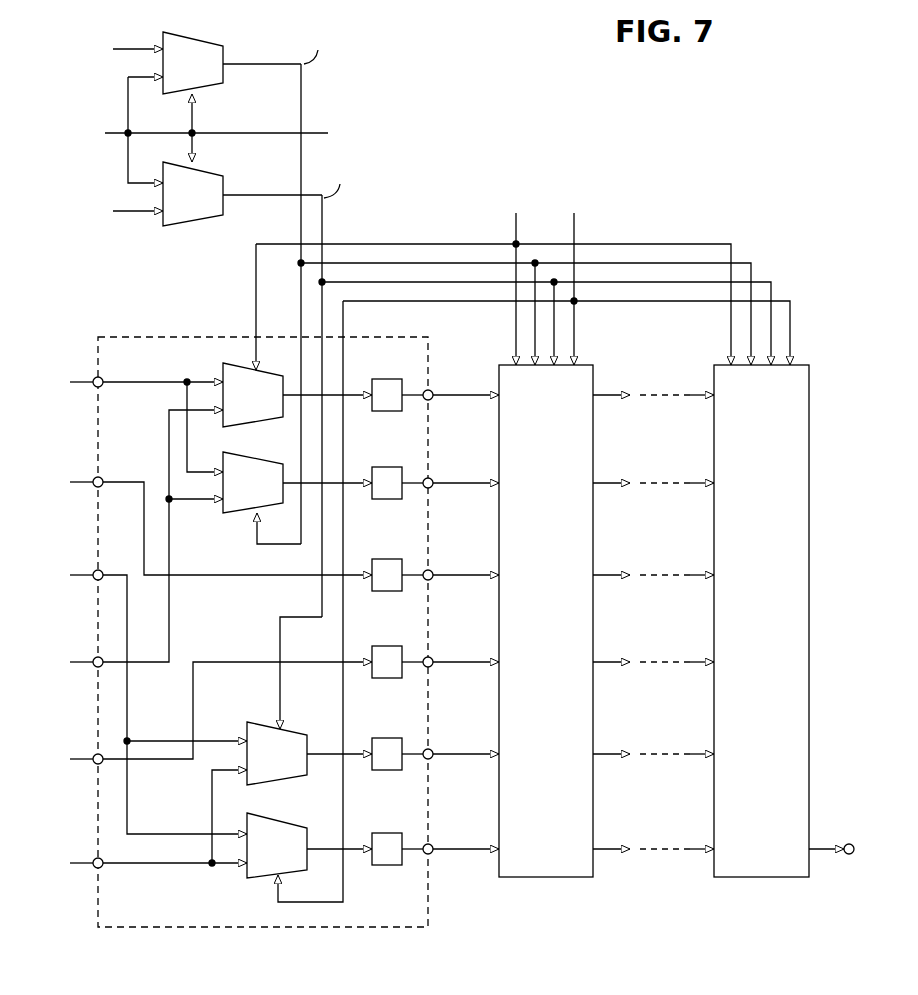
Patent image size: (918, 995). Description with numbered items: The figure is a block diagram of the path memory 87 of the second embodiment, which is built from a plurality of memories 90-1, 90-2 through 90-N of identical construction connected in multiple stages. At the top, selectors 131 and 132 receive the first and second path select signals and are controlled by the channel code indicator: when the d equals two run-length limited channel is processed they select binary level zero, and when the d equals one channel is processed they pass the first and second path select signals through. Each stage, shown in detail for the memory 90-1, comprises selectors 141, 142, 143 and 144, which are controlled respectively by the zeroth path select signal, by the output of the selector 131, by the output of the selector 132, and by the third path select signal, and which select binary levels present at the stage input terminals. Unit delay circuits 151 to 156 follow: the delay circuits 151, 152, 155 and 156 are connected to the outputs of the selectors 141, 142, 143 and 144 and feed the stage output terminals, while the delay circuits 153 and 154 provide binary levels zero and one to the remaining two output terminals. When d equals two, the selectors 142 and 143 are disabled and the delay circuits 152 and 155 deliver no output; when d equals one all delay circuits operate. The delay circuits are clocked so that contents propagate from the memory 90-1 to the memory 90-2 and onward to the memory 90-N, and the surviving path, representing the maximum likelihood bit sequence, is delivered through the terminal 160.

The path memory 87 is at (752, 83).
The selector 131 is at (196, 38).
The selector 132 is at (198, 228).
The selector 141 is at (268, 418).
The selector 142 is at (236, 514).
The selector 143 is at (256, 723).
The selector 144 is at (298, 822).
The unit delay circuit 151 is at (380, 379).
The unit delay circuit 152 is at (380, 467).
The unit delay circuit 153 is at (380, 559).
The unit delay circuit 154 is at (380, 646).
The unit delay circuit 155 is at (380, 738).
The unit delay circuit 156 is at (380, 833).
The memory 90-1 is at (303, 928).
The memory 90-2 is at (538, 878).
The memory 90-N is at (766, 878).
The terminal 160 is at (850, 855).